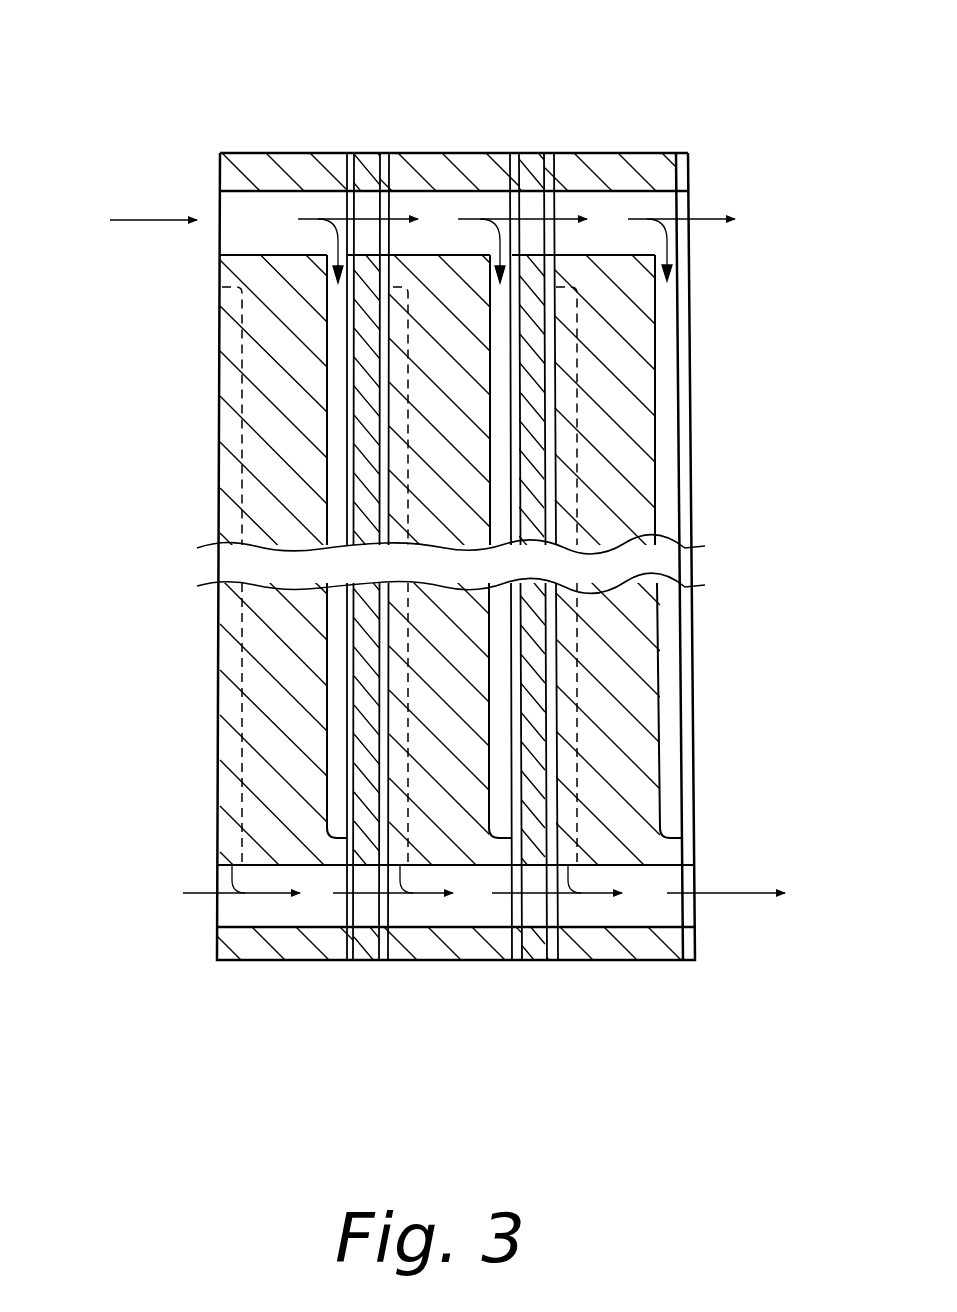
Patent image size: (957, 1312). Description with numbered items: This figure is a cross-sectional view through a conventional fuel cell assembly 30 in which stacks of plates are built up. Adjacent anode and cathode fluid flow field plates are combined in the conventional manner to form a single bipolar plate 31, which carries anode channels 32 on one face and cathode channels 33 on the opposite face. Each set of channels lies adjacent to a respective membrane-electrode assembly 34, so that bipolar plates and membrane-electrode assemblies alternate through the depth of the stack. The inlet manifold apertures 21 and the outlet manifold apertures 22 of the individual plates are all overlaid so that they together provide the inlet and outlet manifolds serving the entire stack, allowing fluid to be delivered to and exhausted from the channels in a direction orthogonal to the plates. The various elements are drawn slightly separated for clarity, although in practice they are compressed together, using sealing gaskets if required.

The fuel cell assembly 30 is at (224, 130).
The bipolar plate 31 is at (292, 152).
The anode channels 32 is at (338, 480).
The cathode channels 33 is at (565, 499).
The membrane-electrode assembly 34 is at (368, 150).
The inlet manifold aperture 21 is at (387, 228).
The outlet manifold 22 is at (534, 880).